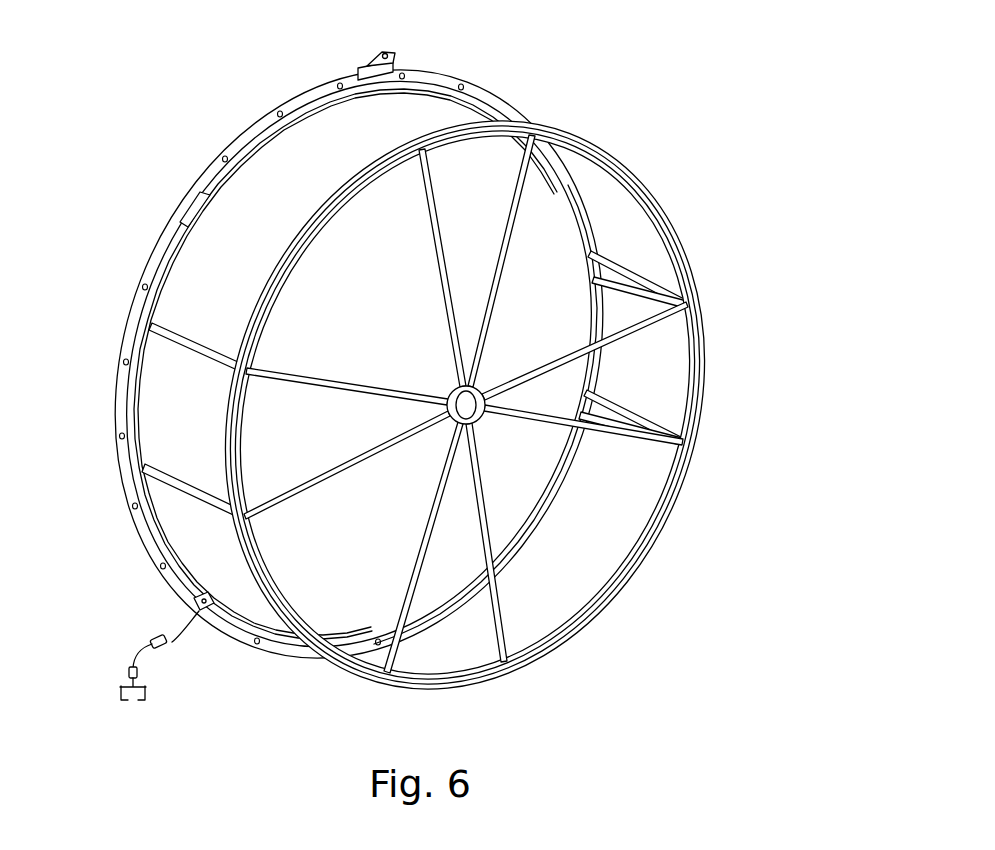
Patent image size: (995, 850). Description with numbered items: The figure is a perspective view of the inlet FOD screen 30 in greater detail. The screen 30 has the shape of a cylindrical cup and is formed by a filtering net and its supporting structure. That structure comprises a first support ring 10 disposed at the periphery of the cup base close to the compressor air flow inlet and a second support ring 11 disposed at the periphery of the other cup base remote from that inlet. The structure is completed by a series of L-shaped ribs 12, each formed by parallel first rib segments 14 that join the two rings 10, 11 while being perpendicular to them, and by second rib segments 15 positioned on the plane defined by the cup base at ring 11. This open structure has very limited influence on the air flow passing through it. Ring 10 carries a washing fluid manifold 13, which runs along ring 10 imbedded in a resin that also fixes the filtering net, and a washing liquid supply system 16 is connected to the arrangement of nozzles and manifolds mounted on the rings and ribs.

The screen 30 is at (413, 379).
The first support ring 10 is at (413, 379).
The second support ring 11 is at (703, 378).
The L-shaped ribs 12 is at (300, 473).
The washing fluid manifold 13 is at (158, 262).
The first rib segments 14 is at (188, 356).
The second rib segments 15 is at (453, 270).
The washing liquid supply system 16 is at (130, 672).